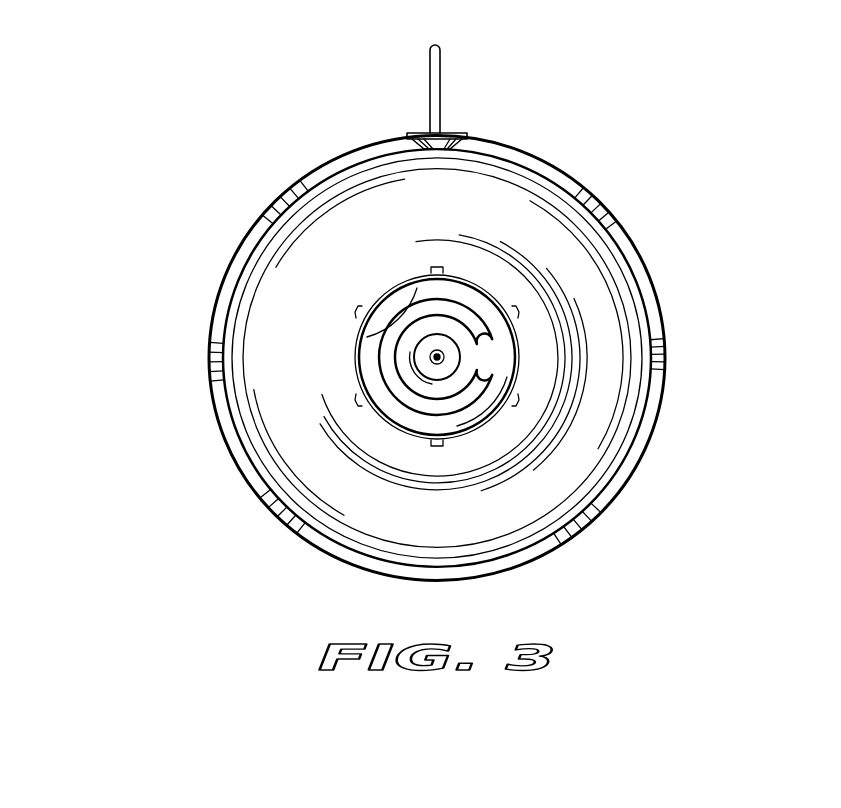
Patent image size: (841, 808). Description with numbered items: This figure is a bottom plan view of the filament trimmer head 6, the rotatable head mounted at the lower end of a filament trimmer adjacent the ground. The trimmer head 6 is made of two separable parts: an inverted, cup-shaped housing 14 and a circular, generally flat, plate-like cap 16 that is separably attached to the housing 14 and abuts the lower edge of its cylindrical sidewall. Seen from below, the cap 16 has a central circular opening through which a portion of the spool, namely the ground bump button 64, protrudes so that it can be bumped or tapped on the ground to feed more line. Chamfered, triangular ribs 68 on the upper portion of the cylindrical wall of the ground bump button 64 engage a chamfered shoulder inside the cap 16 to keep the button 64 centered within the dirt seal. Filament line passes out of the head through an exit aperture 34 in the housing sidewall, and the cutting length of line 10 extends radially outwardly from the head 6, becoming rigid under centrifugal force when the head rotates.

The trimmer head 6 is at (193, 212).
The cutting length of line 10 is at (430, 91).
The housing 14 is at (222, 445).
The cap 16 is at (593, 303).
The exit aperture 34 is at (460, 130).
The ground bump button 64 is at (495, 357).
The chamfered triangular ribs 68 is at (432, 268).